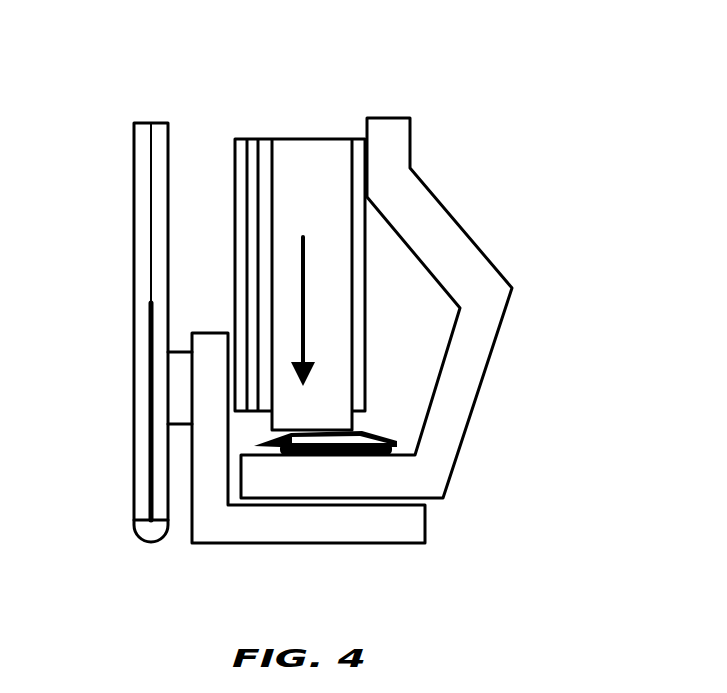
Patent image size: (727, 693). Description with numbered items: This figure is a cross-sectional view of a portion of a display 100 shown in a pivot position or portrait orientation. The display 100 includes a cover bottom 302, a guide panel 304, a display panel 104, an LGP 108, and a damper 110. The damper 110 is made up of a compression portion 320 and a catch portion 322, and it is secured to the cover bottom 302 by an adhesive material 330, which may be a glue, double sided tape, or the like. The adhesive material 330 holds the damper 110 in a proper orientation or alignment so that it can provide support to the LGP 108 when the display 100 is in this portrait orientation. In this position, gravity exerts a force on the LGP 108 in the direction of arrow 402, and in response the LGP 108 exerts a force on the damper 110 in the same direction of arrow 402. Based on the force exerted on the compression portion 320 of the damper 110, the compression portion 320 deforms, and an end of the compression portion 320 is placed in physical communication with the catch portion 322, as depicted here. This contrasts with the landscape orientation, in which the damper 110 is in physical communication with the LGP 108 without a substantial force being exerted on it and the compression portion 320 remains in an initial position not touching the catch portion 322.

The display 100 is at (478, 110).
The display panel 104 is at (143, 258).
The LGP 108 is at (332, 167).
The damper 110 is at (382, 437).
The cover bottom 302 is at (433, 223).
The guide panel 304 is at (379, 527).
The compression portion 320 is at (372, 432).
The catch portion 322 is at (404, 446).
The adhesive material 330 is at (387, 451).
The arrow 402 is at (314, 298).